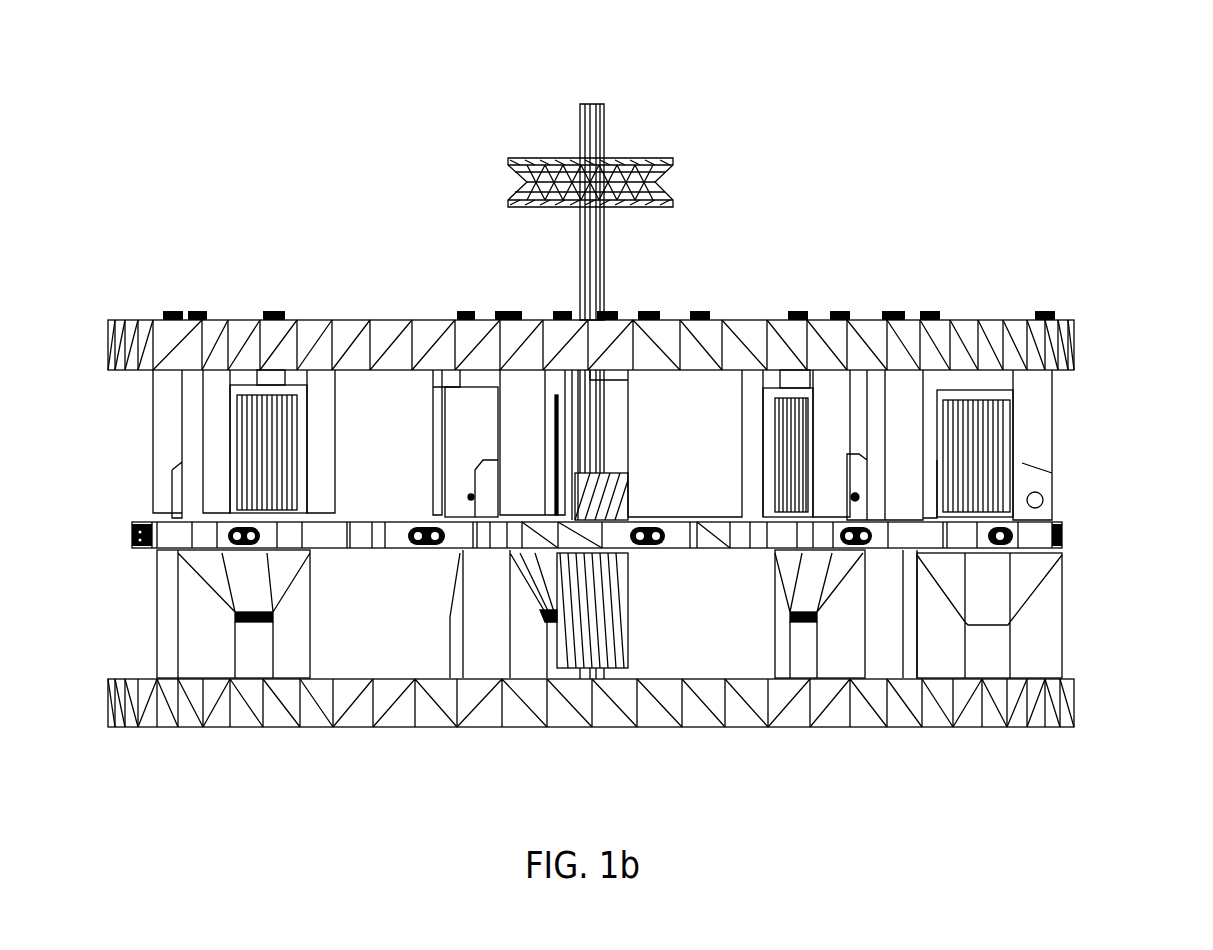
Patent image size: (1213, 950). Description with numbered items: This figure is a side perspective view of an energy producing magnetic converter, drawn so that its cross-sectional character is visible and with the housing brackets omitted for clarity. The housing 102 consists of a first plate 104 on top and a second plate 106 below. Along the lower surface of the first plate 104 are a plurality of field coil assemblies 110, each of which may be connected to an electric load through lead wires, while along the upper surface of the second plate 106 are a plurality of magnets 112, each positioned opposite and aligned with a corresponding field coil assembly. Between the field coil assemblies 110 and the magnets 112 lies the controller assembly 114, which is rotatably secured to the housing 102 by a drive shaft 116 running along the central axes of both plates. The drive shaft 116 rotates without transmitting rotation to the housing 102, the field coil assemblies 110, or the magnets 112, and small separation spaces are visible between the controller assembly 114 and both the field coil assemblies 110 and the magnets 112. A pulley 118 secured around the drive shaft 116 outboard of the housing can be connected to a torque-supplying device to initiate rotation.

The housing 102 is at (575, 515).
The first plate 104 is at (107, 318).
The second plate 106 is at (134, 731).
The field coil assemblies 110 is at (1062, 475).
The magnets 112 is at (1074, 625).
The controller assembly 114 is at (1075, 535).
The drive shaft 116 is at (620, 91).
The pulley 118 is at (671, 190).